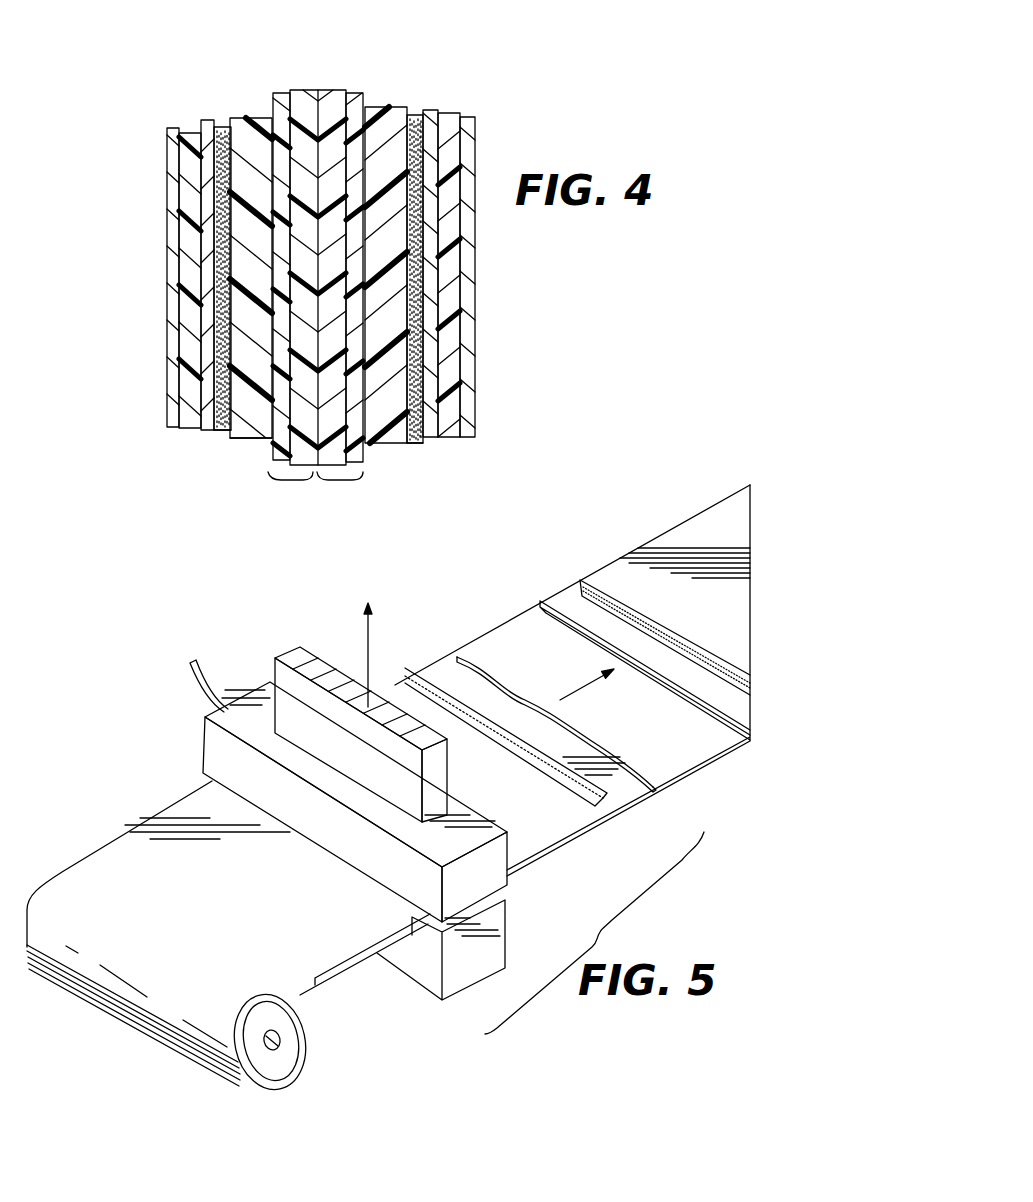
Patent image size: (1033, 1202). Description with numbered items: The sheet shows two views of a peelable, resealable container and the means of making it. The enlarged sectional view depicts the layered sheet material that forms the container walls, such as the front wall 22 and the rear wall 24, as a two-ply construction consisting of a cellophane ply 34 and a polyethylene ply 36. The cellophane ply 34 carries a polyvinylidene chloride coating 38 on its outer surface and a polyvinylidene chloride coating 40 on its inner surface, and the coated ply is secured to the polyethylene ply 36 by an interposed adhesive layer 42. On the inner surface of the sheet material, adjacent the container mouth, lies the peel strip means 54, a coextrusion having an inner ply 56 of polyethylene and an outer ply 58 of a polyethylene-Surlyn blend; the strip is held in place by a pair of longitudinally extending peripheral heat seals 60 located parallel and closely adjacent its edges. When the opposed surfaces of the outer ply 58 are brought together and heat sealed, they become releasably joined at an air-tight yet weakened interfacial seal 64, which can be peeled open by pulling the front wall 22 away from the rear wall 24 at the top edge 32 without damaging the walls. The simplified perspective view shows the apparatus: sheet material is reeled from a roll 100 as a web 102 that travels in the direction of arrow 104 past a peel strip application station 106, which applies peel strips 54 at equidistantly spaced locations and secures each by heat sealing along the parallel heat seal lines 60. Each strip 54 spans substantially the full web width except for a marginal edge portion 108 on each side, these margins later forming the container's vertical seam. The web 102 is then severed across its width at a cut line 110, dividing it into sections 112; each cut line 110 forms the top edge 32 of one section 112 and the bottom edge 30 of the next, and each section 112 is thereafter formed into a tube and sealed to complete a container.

In FIG. 4, the front wall 22 is at (222, 95).
In FIG. 4, the rear wall 24 is at (420, 95).
In FIG. 5, the bottom edge 30 is at (742, 752).
In FIG. 5, the top edge 32 is at (690, 705).
In FIG. 4, the cellophane ply 34 is at (197, 133).
In FIG. 4, the polyethylene ply 36 is at (240, 118).
In FIG. 4, the polyvinylidene chloride coating 38 is at (170, 127).
In FIG. 4, the polyvinylidene chloride coating 40 is at (205, 120).
In FIG. 4, the adhesive layer 42 is at (218, 430).
In FIG. 4, the peel strip means 54 is at (292, 480).
In FIG. 5, the peel strip means 54 is at (595, 583).
In FIG. 4, the inner ply 56 is at (282, 93).
In FIG. 4, the outer ply 58 is at (337, 88).
In FIG. 5, the heat seals 60 is at (540, 752).
In FIG. 4, the interfacial seal 64 is at (268, 438).
In FIG. 5, the roll 100 is at (273, 1063).
In FIG. 5, the web 102 is at (293, 962).
In FIG. 5, the arrow 104 is at (573, 693).
In FIG. 5, the peel strip application station 106 is at (502, 937).
In FIG. 5, the marginal edge portion 108 is at (412, 677).
In FIG. 5, the cut line 110 is at (553, 608).
In FIG. 5, the section 112 is at (685, 535).